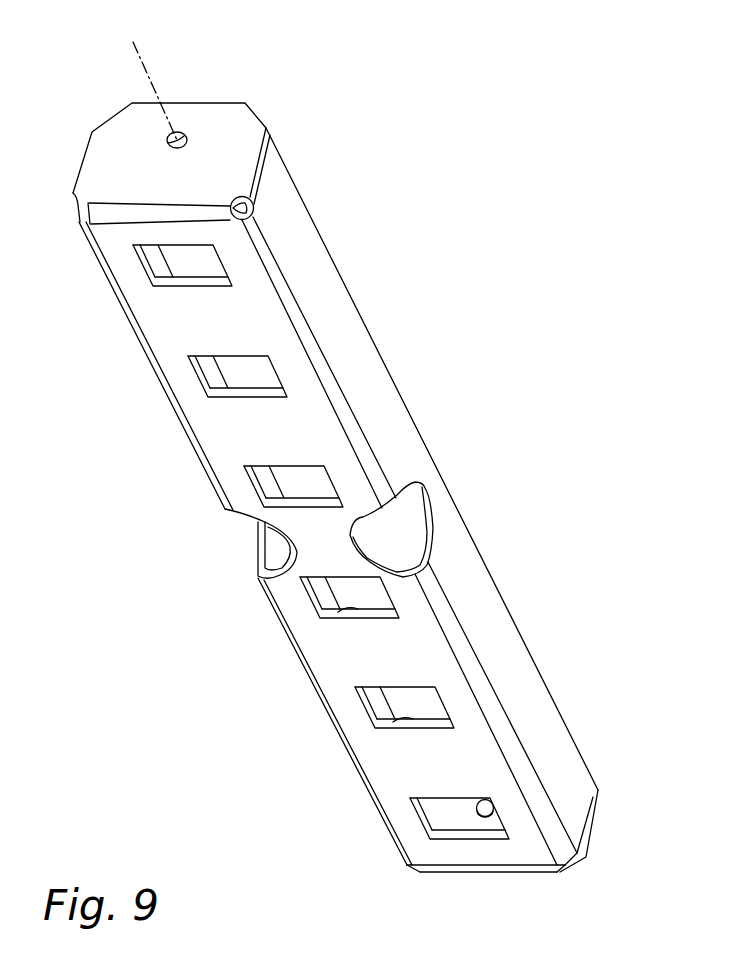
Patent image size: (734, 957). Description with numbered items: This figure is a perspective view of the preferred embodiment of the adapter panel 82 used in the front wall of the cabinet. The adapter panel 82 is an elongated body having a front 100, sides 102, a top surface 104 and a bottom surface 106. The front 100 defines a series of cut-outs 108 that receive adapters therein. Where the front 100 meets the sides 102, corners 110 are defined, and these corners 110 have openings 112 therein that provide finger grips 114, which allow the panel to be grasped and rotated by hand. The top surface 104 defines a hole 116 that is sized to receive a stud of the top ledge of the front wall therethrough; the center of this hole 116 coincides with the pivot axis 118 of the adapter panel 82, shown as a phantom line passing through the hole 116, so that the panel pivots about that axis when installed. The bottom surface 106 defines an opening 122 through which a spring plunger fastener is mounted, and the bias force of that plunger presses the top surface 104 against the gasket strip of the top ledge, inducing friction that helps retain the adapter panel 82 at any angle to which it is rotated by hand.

The adapter panel 82 is at (560, 742).
The front 100 is at (527, 847).
The sides 102 is at (507, 652).
The top surface 104 is at (240, 135).
The bottom surface 106 is at (595, 827).
The cut-outs 108 is at (342, 609).
The corners 110 is at (324, 438).
The openings 112 is at (427, 488).
The finger grips 114 is at (408, 528).
The hole 116 is at (182, 134).
The pivot axis 118 is at (146, 71).
The opening 122 is at (487, 820).